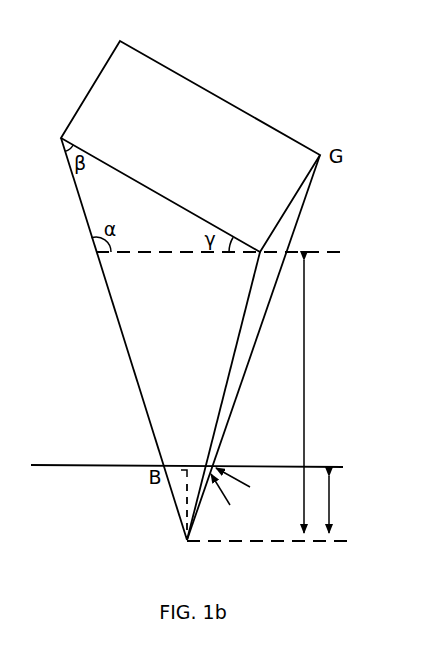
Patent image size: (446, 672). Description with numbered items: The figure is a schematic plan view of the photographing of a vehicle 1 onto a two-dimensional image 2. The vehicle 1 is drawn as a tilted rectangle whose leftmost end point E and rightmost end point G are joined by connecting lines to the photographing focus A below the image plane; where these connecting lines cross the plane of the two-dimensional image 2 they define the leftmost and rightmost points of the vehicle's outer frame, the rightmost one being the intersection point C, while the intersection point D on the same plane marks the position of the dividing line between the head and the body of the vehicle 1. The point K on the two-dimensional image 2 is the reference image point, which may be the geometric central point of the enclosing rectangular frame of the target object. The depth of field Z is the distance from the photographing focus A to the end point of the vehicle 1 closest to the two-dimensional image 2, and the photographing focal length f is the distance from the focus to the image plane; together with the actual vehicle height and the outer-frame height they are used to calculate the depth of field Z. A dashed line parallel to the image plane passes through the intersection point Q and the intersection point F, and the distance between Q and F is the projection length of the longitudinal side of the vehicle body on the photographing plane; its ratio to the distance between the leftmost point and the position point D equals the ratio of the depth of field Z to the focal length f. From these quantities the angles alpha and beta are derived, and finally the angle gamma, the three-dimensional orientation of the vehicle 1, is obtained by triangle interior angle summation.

The vehicle 1 is at (200, 88).
The two-dimensional image 2 is at (53, 464).
The photographing focus A is at (206, 353).
The intersection point Q is at (210, 250).
The point K is at (185, 491).
The leftmost end point of the vehicle E is at (56, 139).
The intersection point F is at (245, 237).
The depth of field Z is at (320, 396).
The photographing focal length f is at (342, 504).
The intersection point C is at (243, 483).
The intersection point D is at (225, 502).